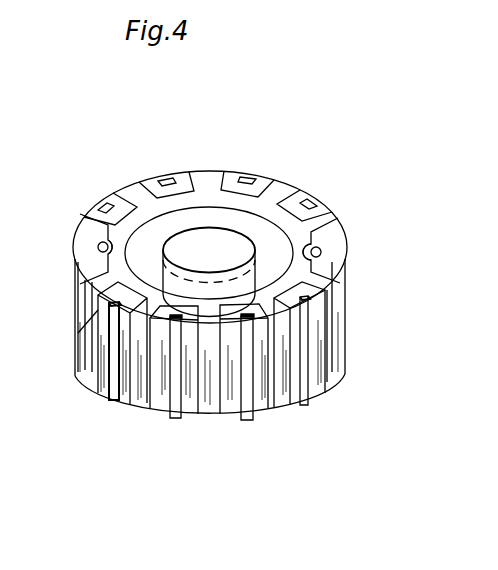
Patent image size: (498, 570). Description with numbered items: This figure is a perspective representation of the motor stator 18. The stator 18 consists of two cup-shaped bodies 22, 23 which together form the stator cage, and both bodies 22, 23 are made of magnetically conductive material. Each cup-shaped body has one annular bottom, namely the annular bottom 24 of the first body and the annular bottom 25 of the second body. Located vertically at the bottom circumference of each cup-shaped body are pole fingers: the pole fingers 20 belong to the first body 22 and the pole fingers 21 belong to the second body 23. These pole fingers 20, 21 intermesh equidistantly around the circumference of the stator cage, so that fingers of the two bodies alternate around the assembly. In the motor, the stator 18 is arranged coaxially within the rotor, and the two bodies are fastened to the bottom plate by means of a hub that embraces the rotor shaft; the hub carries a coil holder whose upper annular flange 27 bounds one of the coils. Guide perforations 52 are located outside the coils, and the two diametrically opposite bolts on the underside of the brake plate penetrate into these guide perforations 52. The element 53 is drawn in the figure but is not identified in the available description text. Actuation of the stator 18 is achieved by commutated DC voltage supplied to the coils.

The stator 18 is at (321, 118).
The pole fingers 20 is at (207, 402).
The pole fingers 21 is at (243, 418).
The cup-shaped body 22 is at (211, 152).
The cup-shaped body 23 is at (142, 428).
The annular bottom 24 is at (153, 206).
The annular bottom 25 is at (290, 398).
The upper annular flange 27 is at (332, 275).
The guide perforations 52 is at (99, 244).
The keyhole notch 53 is at (106, 256).